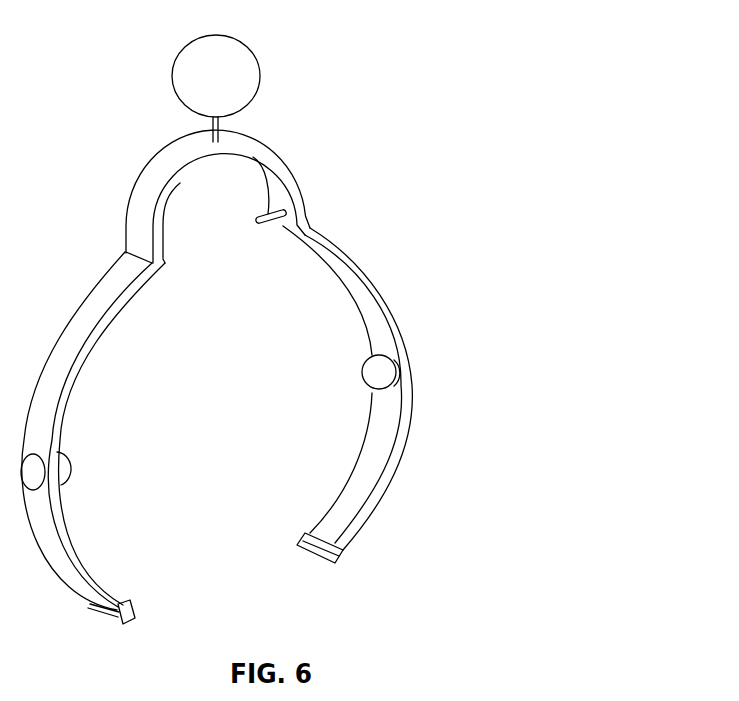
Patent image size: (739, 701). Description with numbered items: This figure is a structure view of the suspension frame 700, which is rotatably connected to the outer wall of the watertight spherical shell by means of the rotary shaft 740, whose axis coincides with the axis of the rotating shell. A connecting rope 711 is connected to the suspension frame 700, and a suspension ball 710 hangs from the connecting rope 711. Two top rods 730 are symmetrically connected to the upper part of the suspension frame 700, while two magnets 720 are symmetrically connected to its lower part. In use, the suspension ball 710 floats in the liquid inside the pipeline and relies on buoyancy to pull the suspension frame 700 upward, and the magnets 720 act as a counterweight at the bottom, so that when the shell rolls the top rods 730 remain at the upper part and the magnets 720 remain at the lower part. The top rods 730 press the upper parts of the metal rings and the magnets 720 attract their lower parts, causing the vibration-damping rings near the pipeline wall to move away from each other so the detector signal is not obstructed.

The suspension frame 700 is at (75, 345).
The suspension ball 710 is at (225, 88).
The connecting rope 711 is at (215, 130).
The magnets 720 is at (300, 538).
The top rods 730 is at (284, 224).
The rotary shaft 740 is at (370, 372).